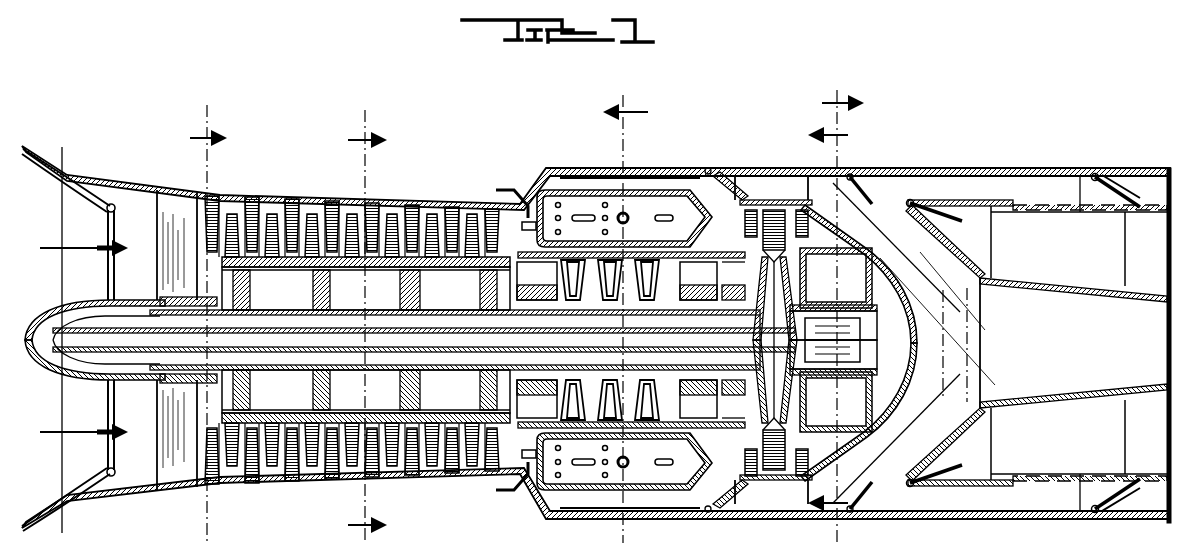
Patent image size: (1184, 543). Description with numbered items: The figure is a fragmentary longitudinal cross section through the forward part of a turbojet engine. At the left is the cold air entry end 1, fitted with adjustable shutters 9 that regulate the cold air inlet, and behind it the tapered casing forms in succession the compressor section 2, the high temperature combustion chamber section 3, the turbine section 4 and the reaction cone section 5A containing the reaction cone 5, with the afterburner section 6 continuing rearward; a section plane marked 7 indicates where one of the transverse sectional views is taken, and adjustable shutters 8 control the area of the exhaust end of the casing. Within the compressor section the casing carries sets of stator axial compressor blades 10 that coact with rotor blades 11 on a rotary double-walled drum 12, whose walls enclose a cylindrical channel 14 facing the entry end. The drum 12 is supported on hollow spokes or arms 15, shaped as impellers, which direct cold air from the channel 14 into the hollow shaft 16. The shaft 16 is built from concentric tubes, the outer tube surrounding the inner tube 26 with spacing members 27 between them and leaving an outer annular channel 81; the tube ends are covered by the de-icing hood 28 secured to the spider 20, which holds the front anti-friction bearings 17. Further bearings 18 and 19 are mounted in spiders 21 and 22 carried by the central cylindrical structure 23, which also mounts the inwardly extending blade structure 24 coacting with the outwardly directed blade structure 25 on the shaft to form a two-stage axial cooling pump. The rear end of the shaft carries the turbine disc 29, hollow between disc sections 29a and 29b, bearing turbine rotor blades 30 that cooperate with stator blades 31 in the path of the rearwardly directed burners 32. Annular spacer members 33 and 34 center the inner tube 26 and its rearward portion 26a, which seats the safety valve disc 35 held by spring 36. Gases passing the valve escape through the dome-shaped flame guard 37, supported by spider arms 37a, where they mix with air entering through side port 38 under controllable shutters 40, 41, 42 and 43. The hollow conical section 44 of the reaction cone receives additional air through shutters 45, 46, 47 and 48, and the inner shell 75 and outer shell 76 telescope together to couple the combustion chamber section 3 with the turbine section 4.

The cold air entry end 1 is at (50, 160).
The compressor section 2 is at (395, 196).
The high temperature combustion chamber section 3 is at (650, 164).
The turbine section 4 is at (783, 120).
The reaction cone 5 is at (815, 314).
The reaction cone section 5A is at (1112, 162).
The afterburner section 6 is at (1050, 300).
The section line 7 is at (363, 326).
The adjustable shutters 8 is at (629, 100).
The adjustable shutters 9 is at (82, 200).
The stator axial compressor blades 10 is at (330, 200).
The rotor blades 11 is at (275, 200).
The double-walled drum 12 is at (280, 270).
The cylindrical channel 14 is at (358, 270).
The spokes or arms 15 is at (396, 284).
The hollow shaft 16 is at (112, 375).
The anti-friction bearings 17 is at (172, 386).
The anti-friction bearings 18 is at (470, 388).
The anti-friction bearings 19 is at (701, 400).
The spider 20 is at (166, 236).
The spider 21 is at (523, 286).
The spider 22 is at (631, 340).
The central cylindrical structure 23 is at (532, 196).
The inwardly extending blade structure 24 is at (580, 262).
The outwardly directed blade structure 25 is at (640, 262).
The inner tube 26 is at (58, 318).
The portion of the inner tube 26a is at (816, 404).
The spacing members 27 is at (316, 280).
The de-icing hood 28 is at (58, 362).
The turbine disc 29 is at (790, 258).
The disc section 29a is at (710, 262).
The disc section 29b is at (990, 384).
The turbine rotor blades 30 is at (775, 200).
The stator blades 31 is at (825, 343).
The high temperature burners 32 is at (672, 195).
The annular spacer member 33 is at (833, 328).
The annular spacer member 34 is at (900, 275).
The valve disc 35 is at (895, 318).
The spring 36 is at (856, 336).
The flame-guard 37 is at (878, 250).
The spider arms 37a is at (930, 166).
The side port 38 is at (796, 166).
The controllable shutter 40 is at (720, 166).
The controllable shutter 41 is at (912, 198).
The controllable shutter 42 is at (732, 516).
The controllable shutter 43 is at (884, 518).
The conical section 44 is at (1005, 278).
The shutter 45 is at (952, 214).
The shutter 46 is at (940, 478).
The shutter 47 is at (1122, 184).
The shutter 48 is at (1120, 490).
The inner shell 75 is at (536, 185).
The outer shell 76 is at (560, 190).
The outer annular channel 81 is at (100, 312).